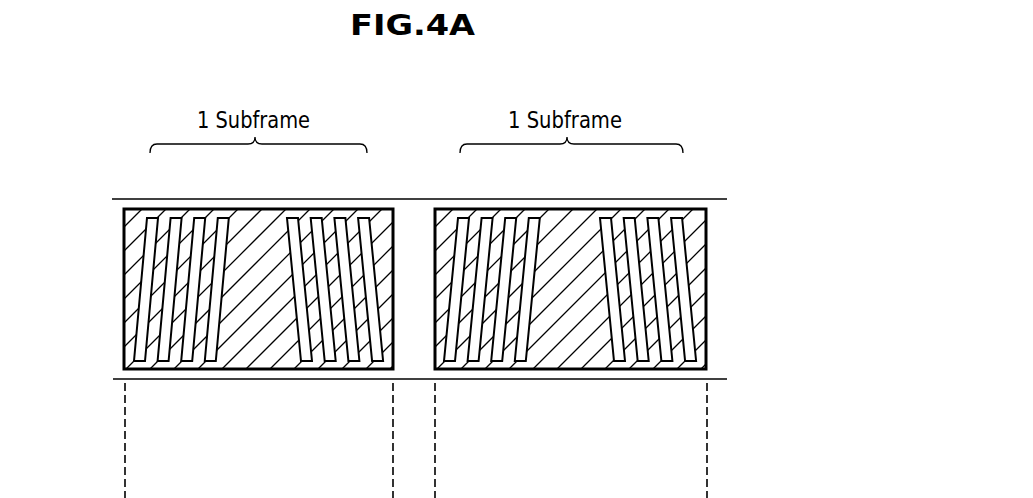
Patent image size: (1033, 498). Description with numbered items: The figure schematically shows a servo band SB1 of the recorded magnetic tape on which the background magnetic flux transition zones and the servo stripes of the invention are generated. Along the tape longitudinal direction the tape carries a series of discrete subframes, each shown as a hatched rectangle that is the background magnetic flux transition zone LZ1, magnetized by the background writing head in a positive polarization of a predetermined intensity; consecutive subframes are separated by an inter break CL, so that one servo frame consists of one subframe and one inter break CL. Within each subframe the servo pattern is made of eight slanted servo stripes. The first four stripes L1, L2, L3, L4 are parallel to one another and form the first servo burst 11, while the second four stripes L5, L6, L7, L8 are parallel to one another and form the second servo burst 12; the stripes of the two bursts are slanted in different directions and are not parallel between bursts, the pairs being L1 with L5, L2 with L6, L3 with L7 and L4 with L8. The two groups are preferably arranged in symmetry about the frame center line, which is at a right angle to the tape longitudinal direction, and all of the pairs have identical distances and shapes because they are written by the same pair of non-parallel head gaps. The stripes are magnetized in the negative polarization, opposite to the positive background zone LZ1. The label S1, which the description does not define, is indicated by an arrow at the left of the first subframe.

The screen S1 is at (113, 290).
The servo band SB1 is at (721, 250).
The background magnetic flux transition zone LZ1 is at (132, 200).
The inter break CL is at (410, 203).
The first servo burst 11 is at (235, 203).
The second servo burst 12 is at (280, 203).
The servo stripe L1 is at (138, 362).
The servo stripe L2 is at (162, 362).
The servo stripe L3 is at (186, 362).
The servo stripe L4 is at (209, 362).
The servo stripe L5 is at (306, 362).
The servo stripe L6 is at (330, 362).
The servo stripe L7 is at (354, 362).
The servo stripe L8 is at (378, 362).